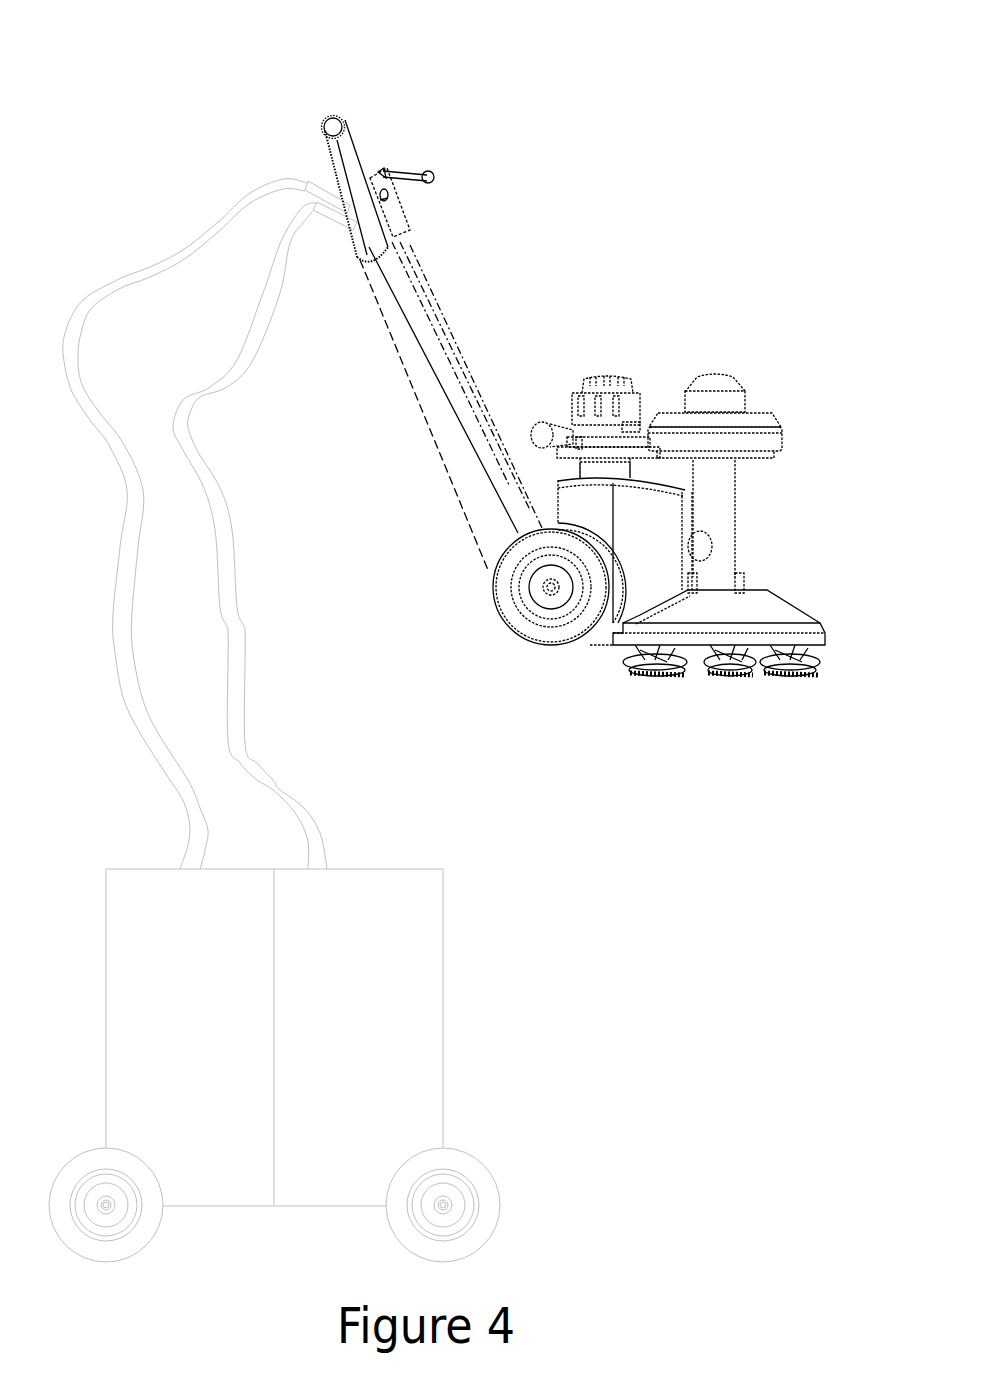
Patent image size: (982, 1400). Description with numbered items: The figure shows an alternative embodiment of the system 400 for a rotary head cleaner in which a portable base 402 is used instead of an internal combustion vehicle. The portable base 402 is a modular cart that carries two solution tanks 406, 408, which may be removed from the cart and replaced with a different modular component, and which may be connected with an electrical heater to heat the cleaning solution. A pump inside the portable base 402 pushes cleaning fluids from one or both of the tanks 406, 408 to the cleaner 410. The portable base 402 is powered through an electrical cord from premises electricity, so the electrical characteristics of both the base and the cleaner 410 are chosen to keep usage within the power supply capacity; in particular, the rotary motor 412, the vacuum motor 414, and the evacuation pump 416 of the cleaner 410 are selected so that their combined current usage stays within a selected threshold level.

The system 400 is at (160, 100).
The portable base 402 is at (104, 832).
The solution tank 406 is at (190, 1037).
The solution tank 408 is at (358, 966).
The cleaner 410 is at (582, 293).
The rotary motor 412 is at (730, 367).
The vacuum motor 414 is at (615, 375).
The evacuation pump 416 is at (635, 542).